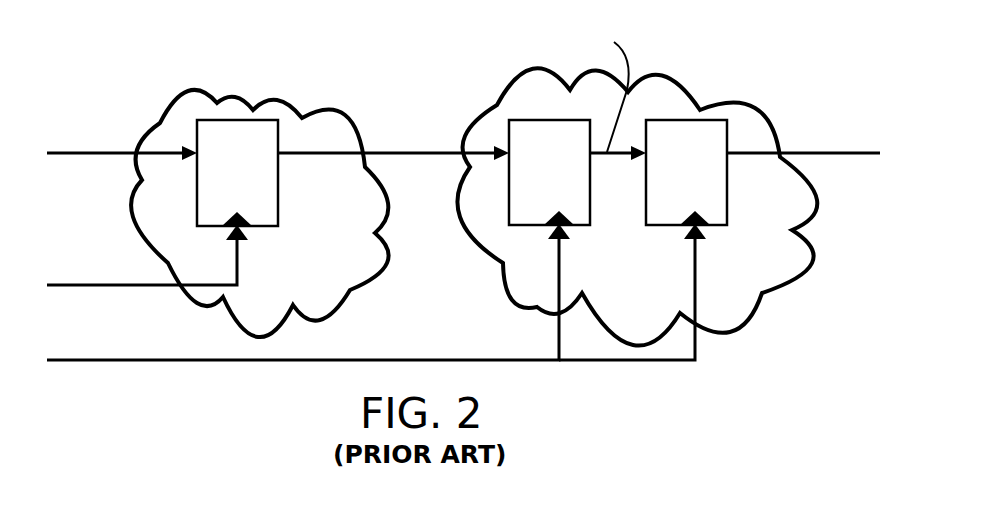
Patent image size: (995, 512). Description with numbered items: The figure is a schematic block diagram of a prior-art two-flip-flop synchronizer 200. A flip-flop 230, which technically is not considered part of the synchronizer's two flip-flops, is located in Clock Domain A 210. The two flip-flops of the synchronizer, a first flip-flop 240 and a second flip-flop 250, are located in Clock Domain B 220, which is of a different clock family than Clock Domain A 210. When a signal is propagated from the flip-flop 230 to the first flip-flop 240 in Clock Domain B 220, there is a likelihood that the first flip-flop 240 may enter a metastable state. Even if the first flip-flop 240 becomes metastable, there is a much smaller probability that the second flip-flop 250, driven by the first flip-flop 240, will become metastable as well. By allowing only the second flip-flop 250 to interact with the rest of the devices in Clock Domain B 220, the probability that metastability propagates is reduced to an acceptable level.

The two-flip-flop synchronizer 200 is at (712, 67).
The Clock Domain A 210 is at (260, 213).
The Clock Domain B 220 is at (637, 206).
The flip-flop 230 is at (237, 173).
The first flip-flop 240 is at (549, 172).
The second flip-flop 250 is at (686, 172).